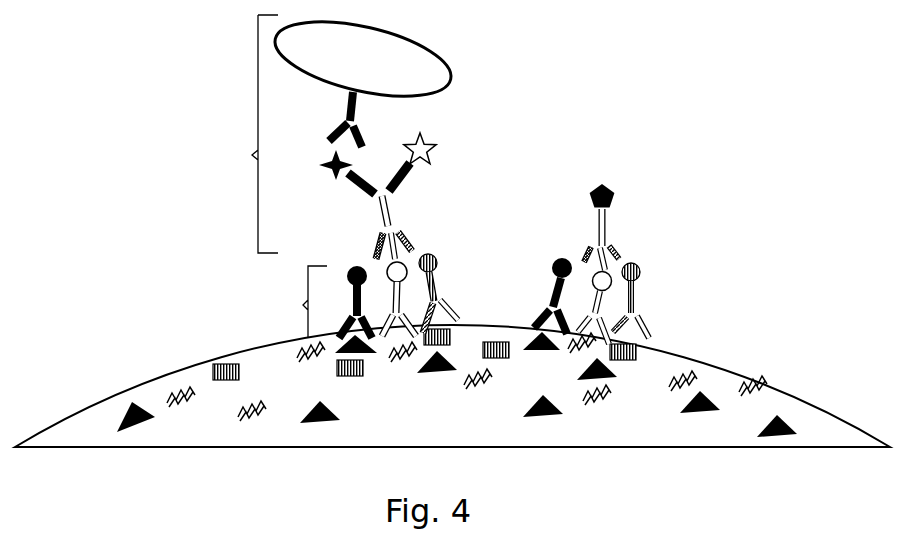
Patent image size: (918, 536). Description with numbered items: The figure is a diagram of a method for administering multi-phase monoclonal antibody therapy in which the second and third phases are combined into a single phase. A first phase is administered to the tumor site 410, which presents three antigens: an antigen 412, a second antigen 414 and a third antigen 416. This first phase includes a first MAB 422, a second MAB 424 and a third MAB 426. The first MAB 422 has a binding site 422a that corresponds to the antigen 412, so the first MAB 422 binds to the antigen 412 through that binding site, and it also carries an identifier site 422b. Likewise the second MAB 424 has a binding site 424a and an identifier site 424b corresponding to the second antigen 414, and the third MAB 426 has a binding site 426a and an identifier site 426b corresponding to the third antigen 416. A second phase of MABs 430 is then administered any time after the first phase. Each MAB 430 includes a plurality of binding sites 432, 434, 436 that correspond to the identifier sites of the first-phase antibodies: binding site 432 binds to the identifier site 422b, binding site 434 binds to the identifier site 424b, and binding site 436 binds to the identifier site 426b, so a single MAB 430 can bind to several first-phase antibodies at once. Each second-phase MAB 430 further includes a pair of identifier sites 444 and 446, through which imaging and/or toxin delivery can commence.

The tumor site 410 is at (118, 318).
The antigen 412 is at (132, 398).
The second antigen 414 is at (186, 386).
The third antigen 416 is at (239, 352).
The first MAB 422 is at (275, 284).
The binding site 422a is at (328, 337).
The identifier site 422b is at (344, 275).
The second MAB 424 is at (444, 333).
The binding site 424a is at (421, 333).
The identifier site 424b is at (406, 283).
The third MAB 426 is at (514, 344).
The binding site 426a is at (458, 324).
The identifier site 426b is at (440, 273).
The second phase MAB 430 is at (355, 135).
The binding site 432 is at (372, 243).
The binding site 434 is at (383, 262).
The binding site 436 is at (408, 233).
The identifier site 444 is at (332, 168).
The identifier site 446 is at (437, 140).